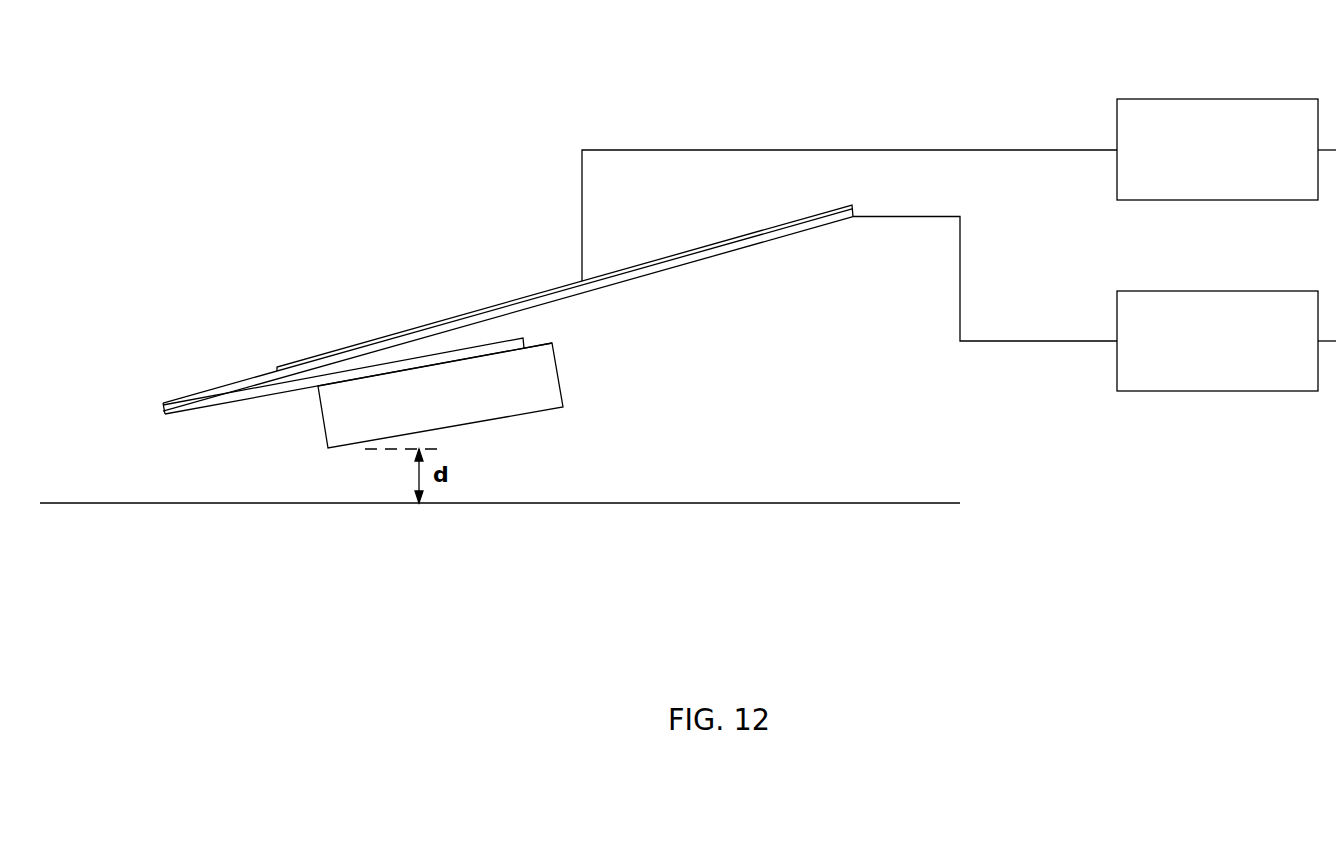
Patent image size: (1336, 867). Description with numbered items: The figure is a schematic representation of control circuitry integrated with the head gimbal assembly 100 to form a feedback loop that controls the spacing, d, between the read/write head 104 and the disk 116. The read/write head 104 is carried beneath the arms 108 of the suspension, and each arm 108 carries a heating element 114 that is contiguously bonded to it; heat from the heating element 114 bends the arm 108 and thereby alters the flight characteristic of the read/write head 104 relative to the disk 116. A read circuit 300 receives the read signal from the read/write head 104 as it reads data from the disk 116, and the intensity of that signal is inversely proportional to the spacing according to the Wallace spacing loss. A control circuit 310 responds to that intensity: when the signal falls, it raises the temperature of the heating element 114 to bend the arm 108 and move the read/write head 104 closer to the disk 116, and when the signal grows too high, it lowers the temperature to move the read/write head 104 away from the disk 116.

The head gimbal assembly 100 is at (251, 241).
The read/write head 104 is at (562, 383).
The arms 108 is at (455, 327).
The heating element 114 is at (322, 350).
The disk 116 is at (795, 503).
The read circuit 300 is at (1157, 291).
The control circuit 310 is at (1157, 99).